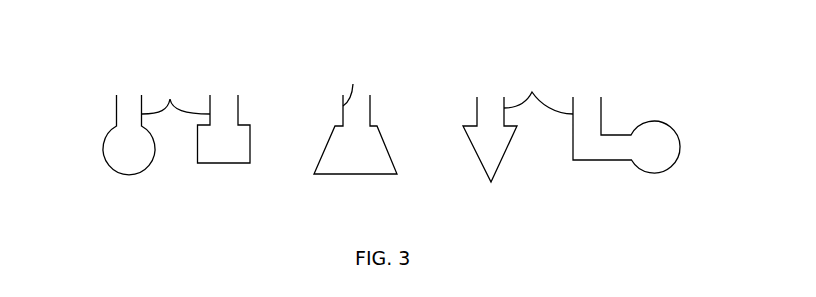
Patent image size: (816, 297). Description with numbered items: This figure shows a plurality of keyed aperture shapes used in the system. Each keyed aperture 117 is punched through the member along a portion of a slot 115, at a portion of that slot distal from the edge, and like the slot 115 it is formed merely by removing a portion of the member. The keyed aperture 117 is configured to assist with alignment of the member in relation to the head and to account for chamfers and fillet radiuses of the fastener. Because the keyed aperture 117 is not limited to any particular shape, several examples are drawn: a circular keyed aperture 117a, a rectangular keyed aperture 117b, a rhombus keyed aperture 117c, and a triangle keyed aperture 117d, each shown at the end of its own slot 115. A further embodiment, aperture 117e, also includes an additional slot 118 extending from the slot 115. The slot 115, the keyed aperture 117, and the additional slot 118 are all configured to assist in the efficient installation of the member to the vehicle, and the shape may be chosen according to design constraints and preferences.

The keyed aperture 117 is at (128, 39).
The circular keyed aperture 117a is at (93, 146).
The rectangular keyed aperture 117b is at (260, 143).
The rhombus keyed aperture 117c is at (394, 147).
The triangle keyed aperture 117d is at (504, 176).
The keyed aperture with additional slot 117e is at (640, 109).
The slot 115 is at (357, 89).
The additional slot 118 is at (612, 162).